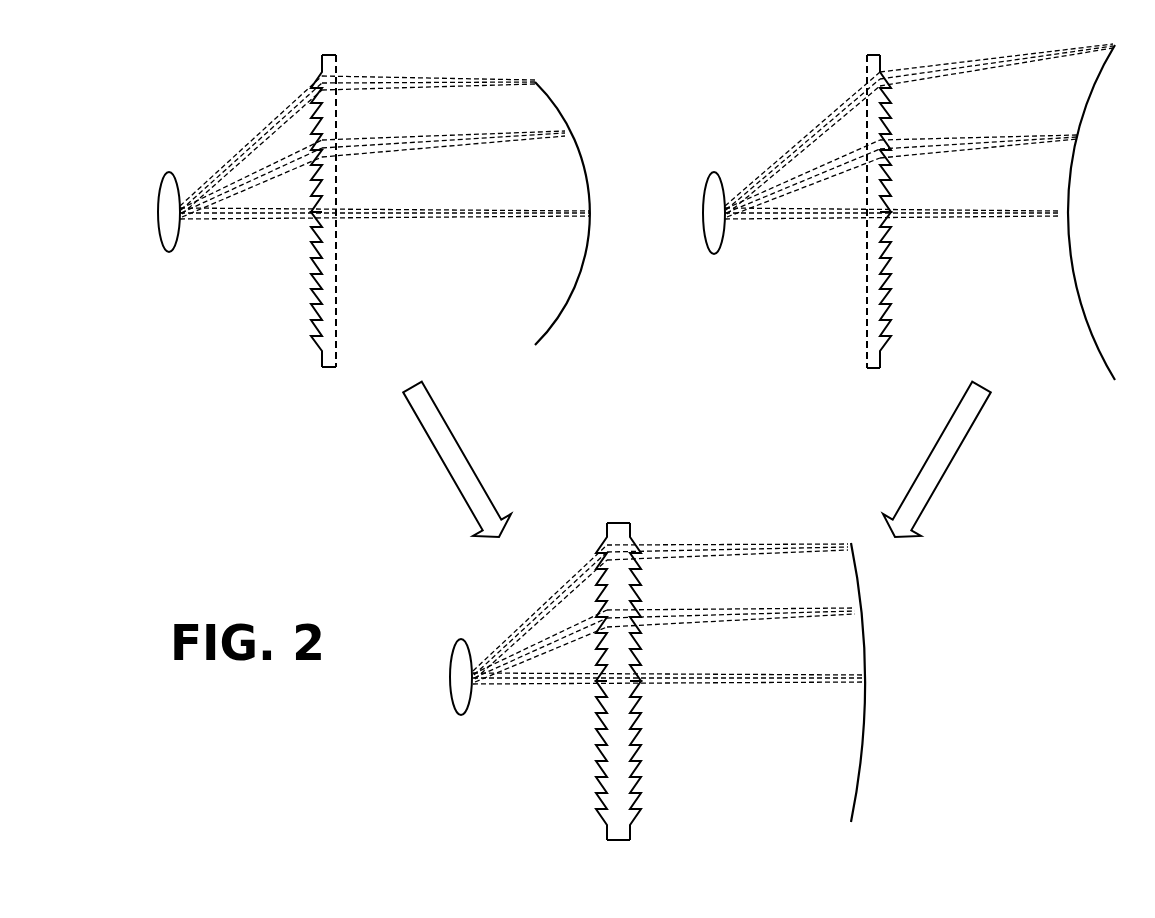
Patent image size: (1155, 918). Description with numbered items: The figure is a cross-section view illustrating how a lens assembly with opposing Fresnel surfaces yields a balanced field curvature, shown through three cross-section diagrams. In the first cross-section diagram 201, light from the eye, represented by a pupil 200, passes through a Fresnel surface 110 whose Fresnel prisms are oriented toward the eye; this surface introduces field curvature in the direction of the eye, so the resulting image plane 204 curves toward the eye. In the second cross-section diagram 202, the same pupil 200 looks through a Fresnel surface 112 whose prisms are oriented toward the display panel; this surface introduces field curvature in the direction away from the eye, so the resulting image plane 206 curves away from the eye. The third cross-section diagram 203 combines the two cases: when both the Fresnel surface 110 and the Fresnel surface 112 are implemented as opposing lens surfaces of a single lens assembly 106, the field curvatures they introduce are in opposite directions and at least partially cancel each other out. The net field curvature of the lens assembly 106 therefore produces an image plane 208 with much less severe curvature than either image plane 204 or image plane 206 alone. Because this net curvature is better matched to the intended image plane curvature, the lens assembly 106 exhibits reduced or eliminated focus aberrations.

The lens assembly 106 is at (616, 516).
The Fresnel surface 110 is at (301, 305).
The Fresnel surface 112 is at (899, 314).
The pupil 200 is at (169, 172).
The cross-section diagram 201 is at (528, 384).
The cross-section diagram 202 is at (843, 385).
The cross-section diagram 203 is at (706, 509).
The image plane 204 is at (584, 165).
The image plane 206 is at (1071, 257).
The image plane 208 is at (865, 658).